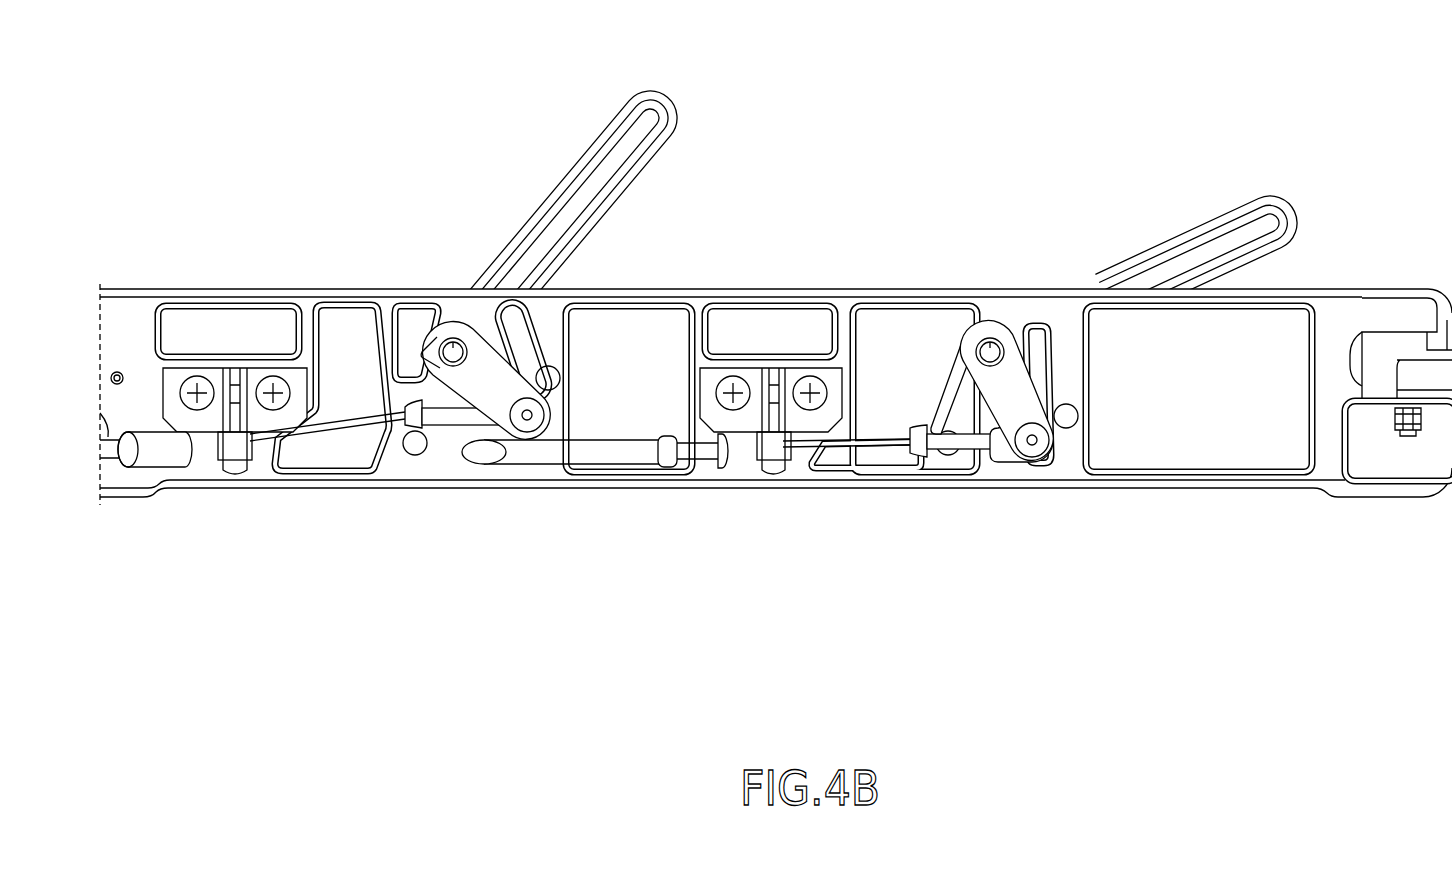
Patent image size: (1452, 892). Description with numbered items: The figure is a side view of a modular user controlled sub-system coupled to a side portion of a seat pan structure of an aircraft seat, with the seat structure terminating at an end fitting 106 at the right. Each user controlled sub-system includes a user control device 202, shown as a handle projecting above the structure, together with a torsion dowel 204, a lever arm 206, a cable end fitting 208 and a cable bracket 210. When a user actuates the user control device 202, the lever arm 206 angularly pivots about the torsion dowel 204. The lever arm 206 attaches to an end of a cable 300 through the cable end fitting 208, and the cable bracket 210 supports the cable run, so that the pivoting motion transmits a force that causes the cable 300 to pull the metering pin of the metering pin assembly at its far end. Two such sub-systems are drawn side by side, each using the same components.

The connector end block 106 is at (1338, 322).
The user control device 202 is at (670, 102).
The torsion dowel 204 is at (452, 340).
The lever arm 206 is at (495, 370).
The cable end fitting 208 is at (437, 427).
The cable bracket 210 is at (272, 443).
The cable 300 is at (113, 450).